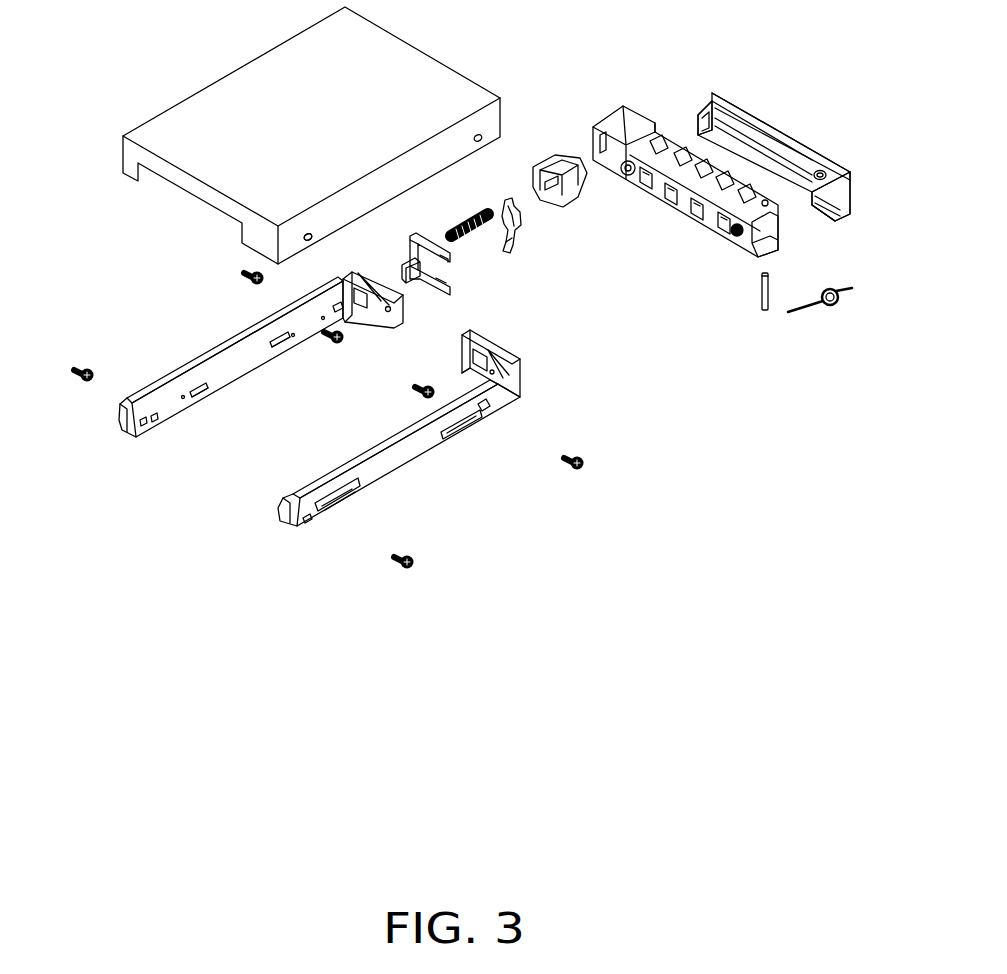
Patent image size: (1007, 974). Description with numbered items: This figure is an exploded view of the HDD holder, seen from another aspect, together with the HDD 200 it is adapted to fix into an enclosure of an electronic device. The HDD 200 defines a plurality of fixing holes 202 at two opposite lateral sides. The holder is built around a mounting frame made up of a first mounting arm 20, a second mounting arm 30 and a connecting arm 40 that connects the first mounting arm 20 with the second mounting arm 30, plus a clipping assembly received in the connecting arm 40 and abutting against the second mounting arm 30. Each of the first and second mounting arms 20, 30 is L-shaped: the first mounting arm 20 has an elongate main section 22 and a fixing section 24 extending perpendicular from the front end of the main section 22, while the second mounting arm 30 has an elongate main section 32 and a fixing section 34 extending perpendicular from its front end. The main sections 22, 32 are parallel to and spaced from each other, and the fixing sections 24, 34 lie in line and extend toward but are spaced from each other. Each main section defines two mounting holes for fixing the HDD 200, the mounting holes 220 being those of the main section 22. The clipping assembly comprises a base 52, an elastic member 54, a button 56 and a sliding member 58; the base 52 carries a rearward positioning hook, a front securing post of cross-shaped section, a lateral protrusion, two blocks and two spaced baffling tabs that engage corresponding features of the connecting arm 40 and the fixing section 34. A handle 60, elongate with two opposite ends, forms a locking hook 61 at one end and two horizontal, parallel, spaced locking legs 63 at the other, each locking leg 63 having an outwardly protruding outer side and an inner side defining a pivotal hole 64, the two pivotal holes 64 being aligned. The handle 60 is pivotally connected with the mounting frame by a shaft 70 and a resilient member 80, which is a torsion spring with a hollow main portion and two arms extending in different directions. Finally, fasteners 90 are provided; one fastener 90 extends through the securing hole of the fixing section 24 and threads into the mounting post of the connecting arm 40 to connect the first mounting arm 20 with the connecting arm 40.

The HDD 200 is at (233, 122).
The fixing holes 202 is at (314, 239).
The first mounting arm 20 is at (416, 421).
The main section 22 is at (393, 458).
The fixing section 24 is at (480, 340).
The mounting holes 220 is at (480, 410).
The second mounting arm 30 is at (258, 354).
The main section 32 is at (230, 363).
The fixing section 34 is at (380, 302).
The connecting arm 40 is at (615, 123).
The base 52 is at (430, 283).
The elastic member 54 is at (458, 222).
The button 56 is at (582, 183).
The sliding member 58 is at (522, 230).
The handle 60 is at (756, 157).
The locking hook 61 is at (698, 117).
The locking legs 63 is at (828, 213).
The pivotal hole 64 is at (821, 170).
The shaft 70 is at (760, 293).
The resilient member 80 is at (835, 308).
The fastener 90 is at (590, 473).